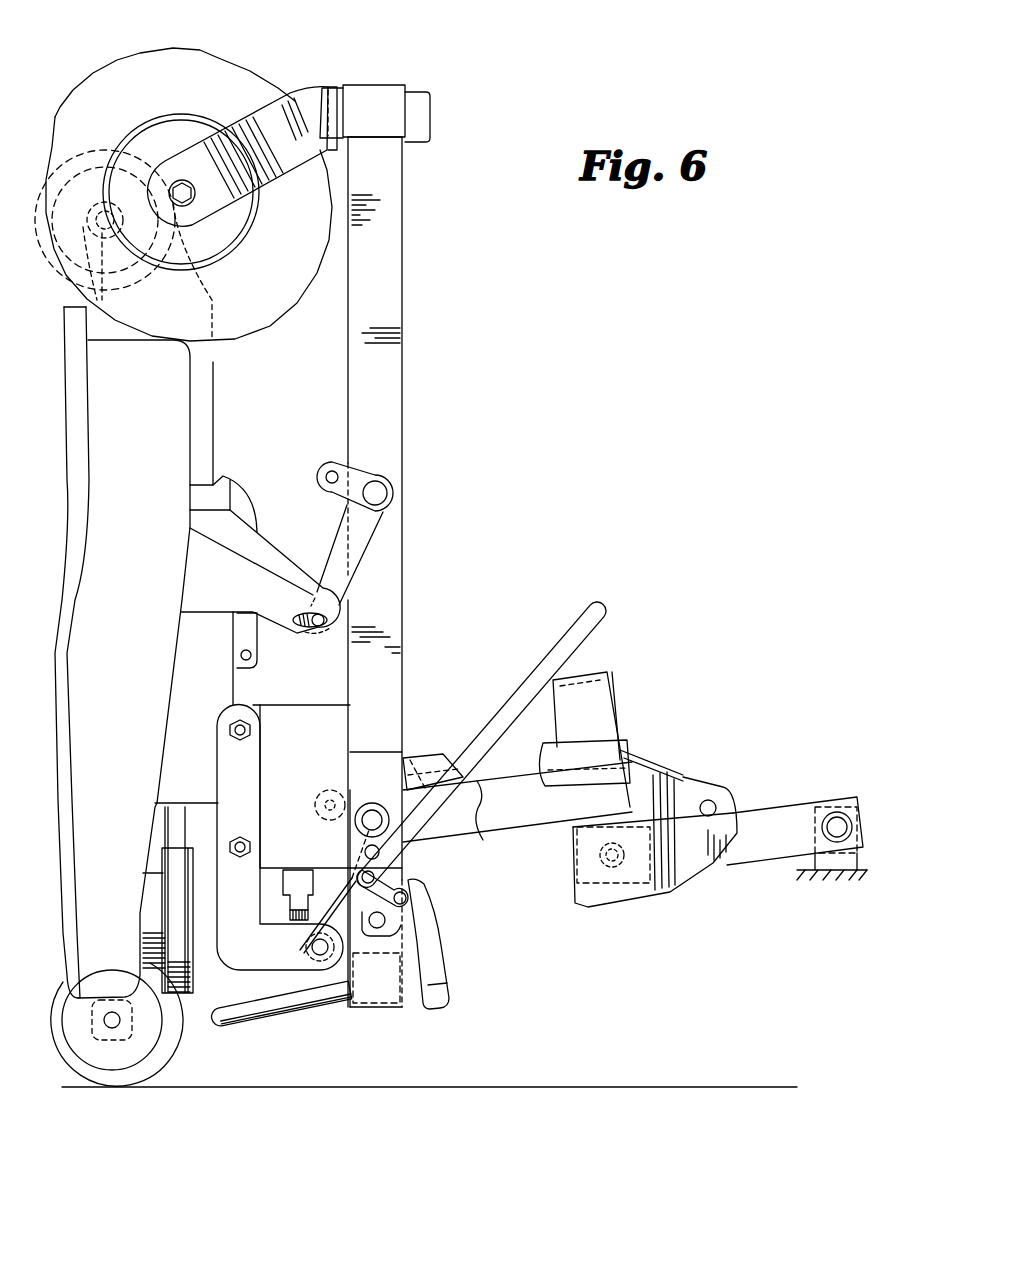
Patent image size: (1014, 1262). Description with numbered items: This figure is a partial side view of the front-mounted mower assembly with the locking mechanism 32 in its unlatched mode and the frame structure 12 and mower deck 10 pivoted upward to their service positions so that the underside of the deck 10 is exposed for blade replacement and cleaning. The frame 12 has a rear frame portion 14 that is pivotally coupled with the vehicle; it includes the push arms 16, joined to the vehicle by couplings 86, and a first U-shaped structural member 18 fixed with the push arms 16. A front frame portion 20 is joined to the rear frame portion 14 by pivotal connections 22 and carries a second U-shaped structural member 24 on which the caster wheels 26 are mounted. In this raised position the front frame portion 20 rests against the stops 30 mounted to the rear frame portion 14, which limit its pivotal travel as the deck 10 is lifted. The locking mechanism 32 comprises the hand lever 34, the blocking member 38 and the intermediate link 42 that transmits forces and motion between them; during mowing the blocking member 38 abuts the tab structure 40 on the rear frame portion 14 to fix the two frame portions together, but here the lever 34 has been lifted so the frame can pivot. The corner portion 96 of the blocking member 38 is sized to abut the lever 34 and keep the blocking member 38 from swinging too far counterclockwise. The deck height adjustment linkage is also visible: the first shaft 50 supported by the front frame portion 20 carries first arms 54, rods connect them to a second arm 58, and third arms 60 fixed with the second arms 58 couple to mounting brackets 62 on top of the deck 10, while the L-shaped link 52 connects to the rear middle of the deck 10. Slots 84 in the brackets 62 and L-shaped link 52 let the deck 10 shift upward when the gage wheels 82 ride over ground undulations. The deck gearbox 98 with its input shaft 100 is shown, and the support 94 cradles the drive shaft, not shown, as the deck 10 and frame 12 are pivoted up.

The mower deck 10 is at (152, 509).
The frame structure 12 is at (408, 569).
The rear frame portion 14 is at (527, 832).
The push arms 16 is at (778, 803).
The first U-shaped structural member 18 is at (503, 813).
The front frame portion 20 is at (400, 292).
The pivotal connections 22 is at (373, 790).
The second U-shaped structural member 24 is at (350, 728).
The caster wheels 26 is at (230, 52).
The stops 30 is at (440, 757).
The locking mechanism 32 is at (438, 893).
The lever 34 is at (572, 620).
The blocking member 38 is at (442, 980).
The tab structure 40 is at (542, 752).
The intermediate link 42 is at (405, 860).
The first shaft 50 is at (345, 785).
The L-shaped link 52 is at (228, 937).
The first arms 54 is at (330, 867).
The second arm 58 is at (340, 456).
The third arms 60 is at (333, 547).
The mounting brackets 62 is at (275, 613).
The gage wheels 82 is at (80, 162).
The slots 84 is at (302, 614).
The couplings 86 is at (838, 805).
The support 94 is at (226, 1027).
The corner portion 96 is at (424, 880).
The deck gearbox 98 is at (328, 705).
The input shaft 100 is at (347, 1000).